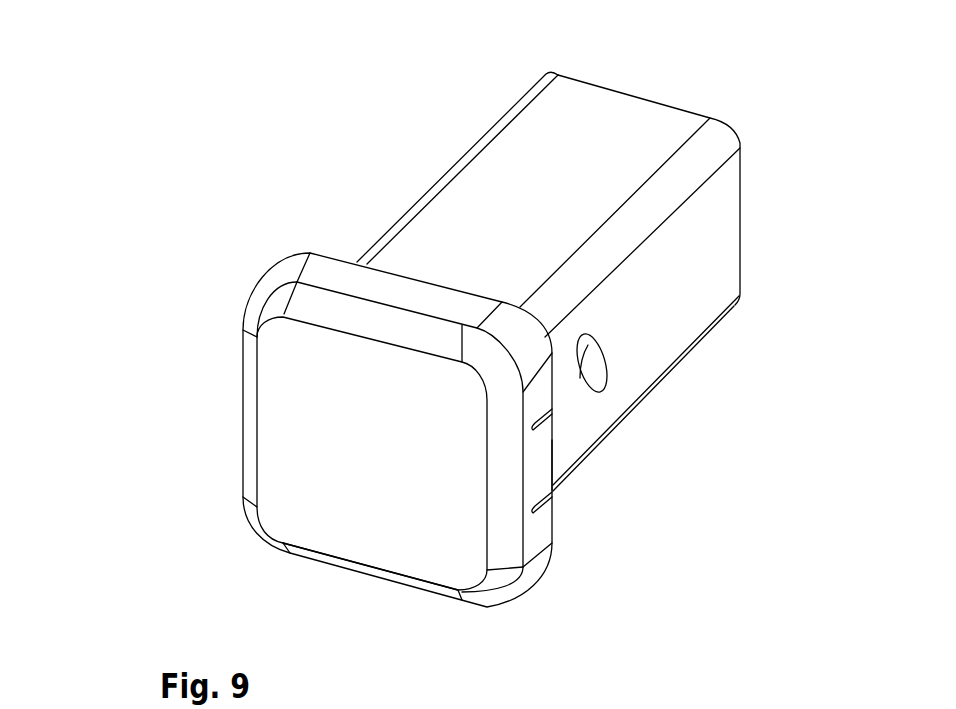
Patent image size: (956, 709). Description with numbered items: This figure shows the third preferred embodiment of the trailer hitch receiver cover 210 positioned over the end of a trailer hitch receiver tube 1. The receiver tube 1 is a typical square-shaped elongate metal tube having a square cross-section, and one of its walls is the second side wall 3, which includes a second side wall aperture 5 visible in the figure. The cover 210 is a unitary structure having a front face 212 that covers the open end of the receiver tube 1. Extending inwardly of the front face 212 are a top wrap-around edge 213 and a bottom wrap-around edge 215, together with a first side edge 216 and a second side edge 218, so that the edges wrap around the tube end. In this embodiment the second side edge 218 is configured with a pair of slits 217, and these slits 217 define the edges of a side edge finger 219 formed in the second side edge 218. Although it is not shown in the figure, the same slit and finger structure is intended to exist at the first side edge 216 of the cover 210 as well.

The trailer hitch receiver tube 1 is at (618, 119).
The second side wall 3 is at (721, 257).
The second side wall aperture 5 is at (596, 367).
The trailer hitch receiver cover 210 is at (187, 233).
The front face 212 is at (303, 512).
The top wrap-around edge 213 is at (420, 297).
The bottom wrap-around edge 215 is at (363, 572).
The first side edge 216 is at (248, 412).
The slits 217 is at (547, 419).
The second side edge 218 is at (505, 548).
The side edge finger 219 is at (542, 460).